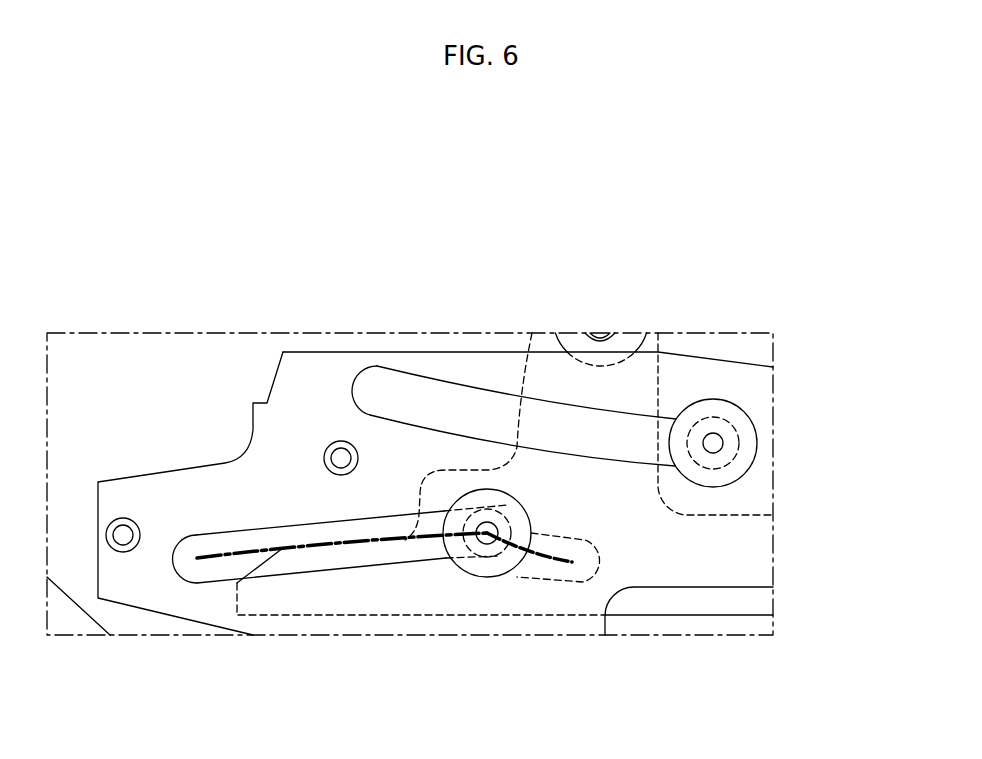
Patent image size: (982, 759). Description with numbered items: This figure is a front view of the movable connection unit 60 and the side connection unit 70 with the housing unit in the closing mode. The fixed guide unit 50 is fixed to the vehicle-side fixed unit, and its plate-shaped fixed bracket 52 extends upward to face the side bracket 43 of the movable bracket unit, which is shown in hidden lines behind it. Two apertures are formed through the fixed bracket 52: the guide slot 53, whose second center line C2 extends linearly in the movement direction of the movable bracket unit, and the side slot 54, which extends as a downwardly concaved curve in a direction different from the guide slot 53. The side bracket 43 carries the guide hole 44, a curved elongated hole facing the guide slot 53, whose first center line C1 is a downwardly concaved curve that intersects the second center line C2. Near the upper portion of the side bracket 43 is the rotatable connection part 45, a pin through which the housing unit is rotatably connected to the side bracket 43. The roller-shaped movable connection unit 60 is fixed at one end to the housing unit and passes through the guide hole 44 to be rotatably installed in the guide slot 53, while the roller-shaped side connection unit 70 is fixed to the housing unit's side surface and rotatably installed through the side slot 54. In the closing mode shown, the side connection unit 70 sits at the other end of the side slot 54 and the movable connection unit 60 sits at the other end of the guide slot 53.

The fixed guide unit 50 is at (722, 355).
The fixed bracket 52 is at (315, 382).
The side slot 54 is at (415, 375).
The side bracket 43 is at (543, 342).
The rotatable connection part 45 is at (623, 340).
The side connection unit 70 is at (755, 424).
The guide slot 53 is at (192, 583).
The second center line C2 is at (218, 560).
The movable connection unit 60 is at (473, 577).
The guide hole 44 is at (570, 583).
The first center line C1 is at (556, 558).